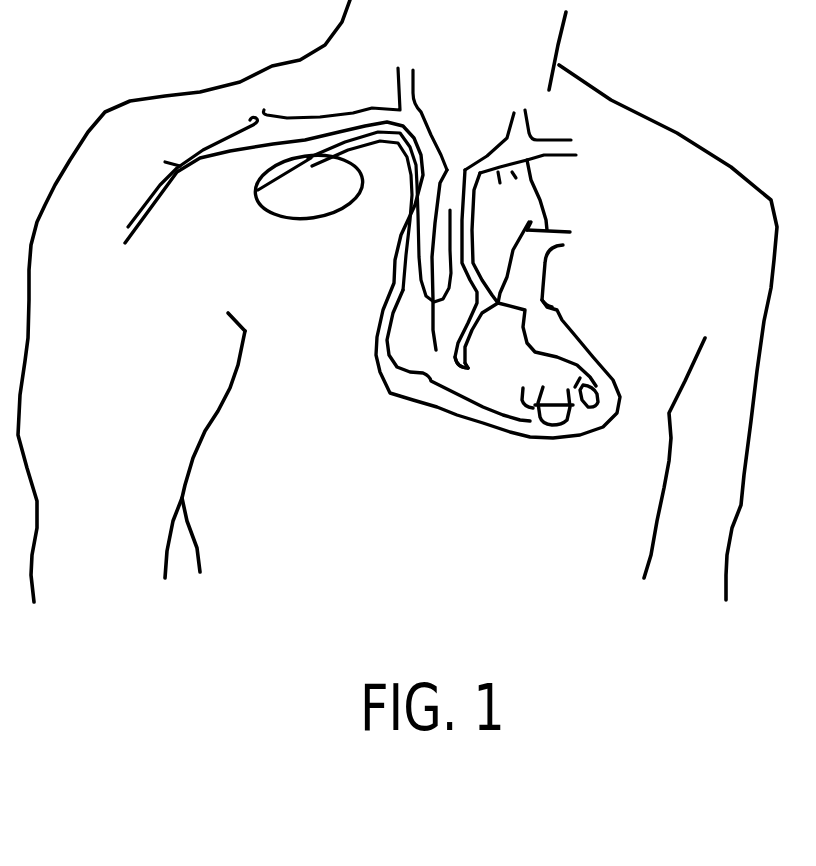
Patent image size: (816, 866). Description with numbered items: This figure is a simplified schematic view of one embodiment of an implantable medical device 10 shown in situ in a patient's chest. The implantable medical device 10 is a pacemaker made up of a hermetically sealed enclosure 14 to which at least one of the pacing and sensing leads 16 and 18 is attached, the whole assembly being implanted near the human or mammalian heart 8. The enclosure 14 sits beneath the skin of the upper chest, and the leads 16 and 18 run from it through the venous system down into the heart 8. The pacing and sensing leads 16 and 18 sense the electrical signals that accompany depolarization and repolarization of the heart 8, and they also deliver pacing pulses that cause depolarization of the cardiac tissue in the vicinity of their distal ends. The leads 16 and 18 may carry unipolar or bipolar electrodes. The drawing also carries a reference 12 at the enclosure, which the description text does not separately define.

The heart 8 is at (583, 340).
The implantable medical device 10 is at (259, 222).
The connector header 12 is at (265, 173).
The hermetically sealed enclosure 14 is at (327, 200).
The pacing and sensing lead 16 is at (410, 253).
The pacing and sensing lead 18 is at (435, 345).